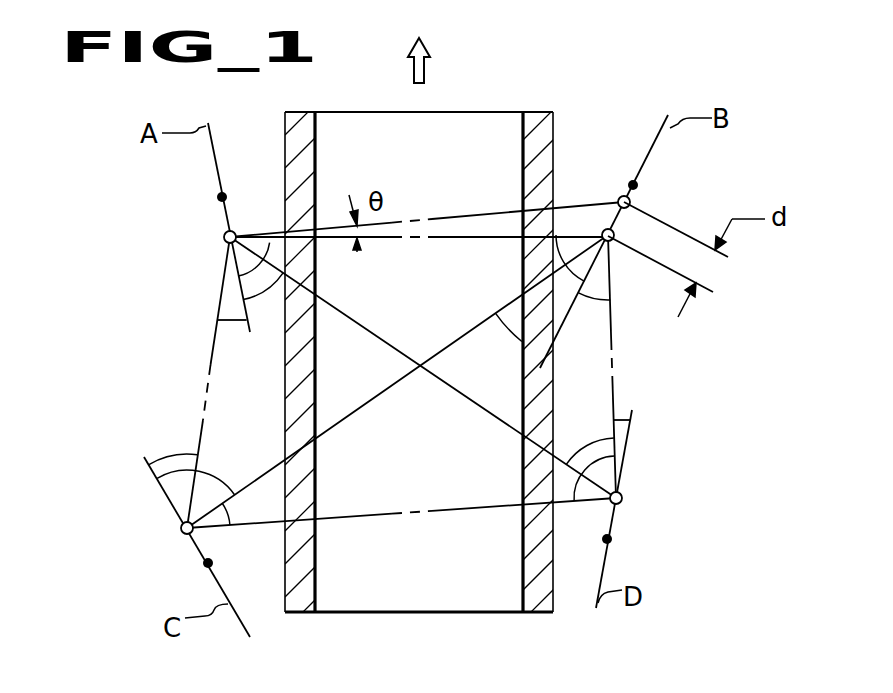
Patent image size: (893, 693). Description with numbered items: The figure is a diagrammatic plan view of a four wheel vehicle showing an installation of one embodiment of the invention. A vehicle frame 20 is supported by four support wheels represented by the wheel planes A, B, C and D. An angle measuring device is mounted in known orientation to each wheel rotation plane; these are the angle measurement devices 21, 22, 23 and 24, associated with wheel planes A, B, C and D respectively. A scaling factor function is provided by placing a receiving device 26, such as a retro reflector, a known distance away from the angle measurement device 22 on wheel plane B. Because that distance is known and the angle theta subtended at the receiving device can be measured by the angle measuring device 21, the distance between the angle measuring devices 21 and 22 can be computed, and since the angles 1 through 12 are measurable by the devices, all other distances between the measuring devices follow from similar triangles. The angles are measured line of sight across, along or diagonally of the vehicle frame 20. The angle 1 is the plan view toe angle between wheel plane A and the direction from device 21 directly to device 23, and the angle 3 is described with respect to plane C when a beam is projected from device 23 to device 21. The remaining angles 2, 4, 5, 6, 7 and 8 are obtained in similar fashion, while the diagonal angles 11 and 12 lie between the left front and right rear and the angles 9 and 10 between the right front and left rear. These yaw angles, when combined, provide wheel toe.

The angle 1 is at (226, 322).
The angle 2 is at (600, 300).
The angle 3 is at (190, 456).
The angle 4 is at (622, 418).
The angle 5 is at (270, 246).
The angle 6 is at (548, 262).
The angle 7 is at (232, 514).
The angle 8 is at (573, 497).
The angle 9 is at (216, 478).
The angle 10 is at (520, 342).
The angle 11 is at (283, 276).
The angle 12 is at (596, 446).
The vehicle frame 20 is at (532, 114).
The angle measurement device 21 is at (222, 238).
The angle measurement device 22 is at (614, 234).
The angle measurement device 23 is at (181, 527).
The angle measurement device 24 is at (622, 498).
The receiving device 26 is at (630, 200).